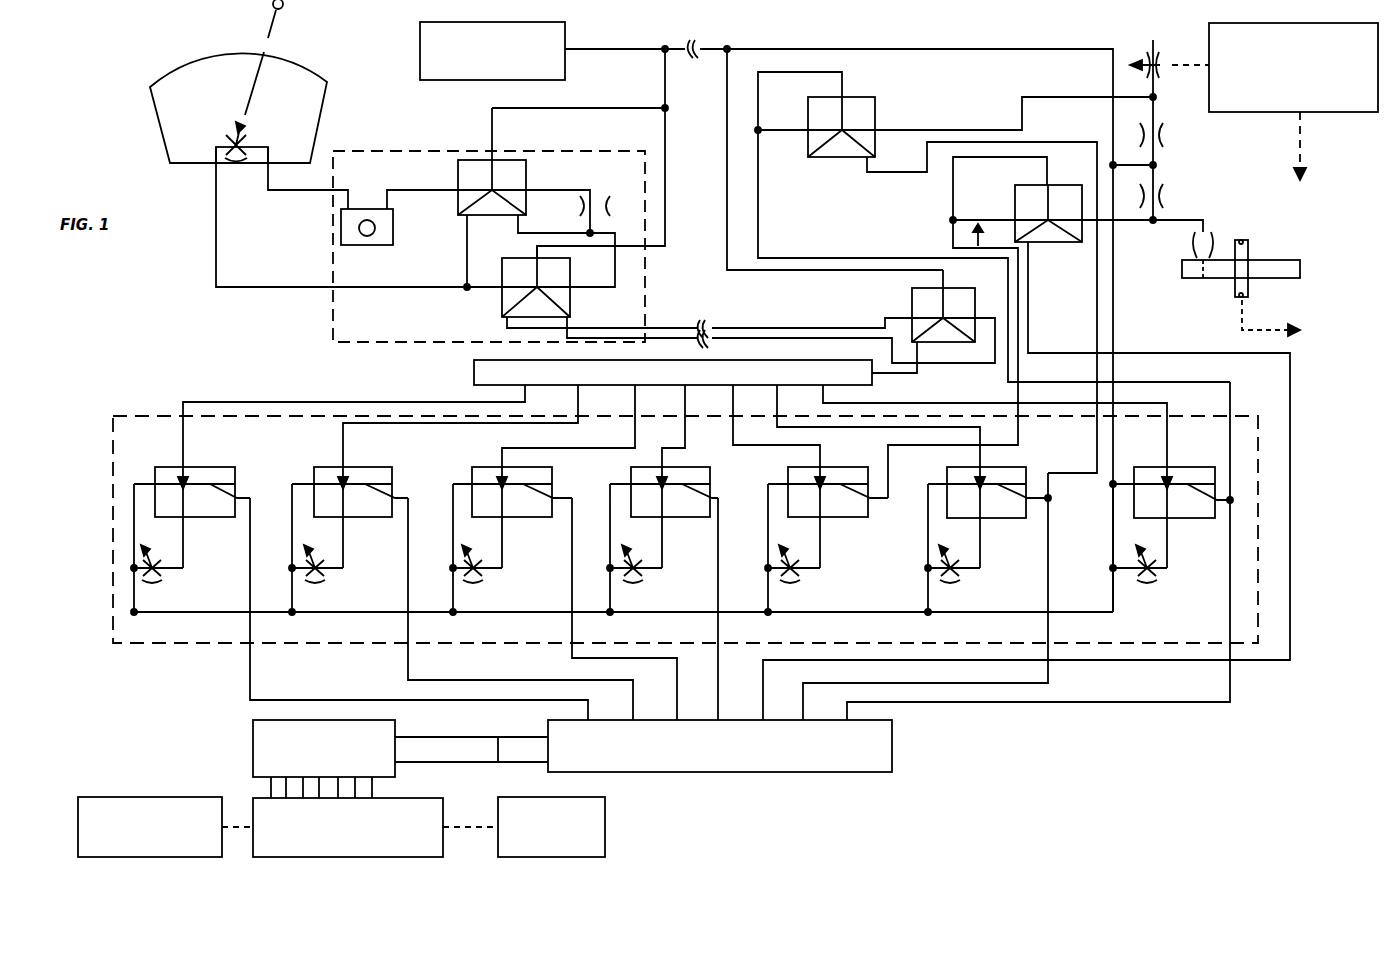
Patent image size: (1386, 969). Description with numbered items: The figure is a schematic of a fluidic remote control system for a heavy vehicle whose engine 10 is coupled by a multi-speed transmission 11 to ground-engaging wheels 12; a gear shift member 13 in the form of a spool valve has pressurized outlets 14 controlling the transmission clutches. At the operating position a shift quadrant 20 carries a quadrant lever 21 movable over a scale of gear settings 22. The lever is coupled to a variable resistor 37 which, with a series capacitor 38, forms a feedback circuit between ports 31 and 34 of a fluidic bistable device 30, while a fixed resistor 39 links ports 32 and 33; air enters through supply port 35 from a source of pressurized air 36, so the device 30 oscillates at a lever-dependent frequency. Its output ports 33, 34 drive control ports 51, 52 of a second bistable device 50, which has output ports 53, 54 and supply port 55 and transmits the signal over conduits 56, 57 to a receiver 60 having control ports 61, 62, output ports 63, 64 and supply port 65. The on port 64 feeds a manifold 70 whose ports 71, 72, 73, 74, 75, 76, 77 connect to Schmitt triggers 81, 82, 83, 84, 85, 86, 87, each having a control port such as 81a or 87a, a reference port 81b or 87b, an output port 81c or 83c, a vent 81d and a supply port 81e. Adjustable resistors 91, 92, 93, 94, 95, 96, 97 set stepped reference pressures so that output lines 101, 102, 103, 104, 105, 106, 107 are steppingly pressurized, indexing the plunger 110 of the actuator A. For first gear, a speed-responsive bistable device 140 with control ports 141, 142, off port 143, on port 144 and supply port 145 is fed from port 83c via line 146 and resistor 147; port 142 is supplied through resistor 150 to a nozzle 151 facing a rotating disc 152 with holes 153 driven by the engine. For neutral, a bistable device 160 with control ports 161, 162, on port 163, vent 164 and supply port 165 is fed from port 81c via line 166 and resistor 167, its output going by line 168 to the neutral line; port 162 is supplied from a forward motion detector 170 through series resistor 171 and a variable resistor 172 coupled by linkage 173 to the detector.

The engine 10 is at (118, 796).
The multi-speed transmission 11 is at (428, 857).
The ground-engaging wheels 12 is at (605, 835).
The gear shift member 13 is at (247, 745).
The pressurized outlets 14 is at (252, 789).
The shift quadrant 20 is at (171, 136).
The quadrant lever 21 is at (286, 22).
The scale of gear settings 22 is at (158, 52).
The fluidic bistable device 30 is at (526, 172).
The first control port 31 is at (440, 187).
The second control port 32 is at (553, 188).
The off output port 33 is at (528, 221).
The on output port 34 is at (462, 222).
The supply port 35 is at (494, 154).
The source of pressurized air 36 is at (565, 66).
The variable resistor 37 is at (227, 142).
The series capacitor 38 is at (375, 244).
The fixed resistor 39 is at (606, 206).
The second bistable device 50 is at (568, 270).
The control port 51 is at (607, 286).
The control port 52 is at (500, 294).
The output port 53 is at (504, 322).
The output port 54 is at (570, 320).
The supply port 55 is at (534, 255).
The conduit 56 is at (744, 324).
The conduit 57 is at (808, 326).
The receiver 60 is at (958, 286).
The control port 61 is at (907, 310).
The control port 62 is at (976, 314).
The output port 63 is at (962, 338).
The on output port 64 is at (919, 344).
The supply port 65 is at (942, 270).
The manifold 70 is at (474, 378).
The manifold port 71 is at (866, 396).
The manifold port 72 is at (776, 416).
The manifold port 73 is at (735, 428).
The manifold port 74 is at (682, 414).
The manifold port 75 is at (636, 422).
The manifold port 76 is at (580, 402).
The manifold port 77 is at (528, 390).
The Schmitt trigger 81 is at (1169, 467).
The control port 81a is at (1167, 468).
The reference port 81b is at (1168, 540).
The output port 81c is at (1218, 500).
The vent 81d is at (1216, 480).
The supply port 81e is at (1143, 494).
The Schmitt trigger 82 is at (1014, 470).
The Schmitt trigger 83 is at (824, 467).
The output port 83c is at (867, 508).
The Schmitt trigger 84 is at (709, 467).
The Schmitt trigger 85 is at (550, 467).
The Schmitt trigger 86 is at (372, 467).
The Schmitt trigger 87 is at (216, 467).
The control port 87a is at (180, 462).
The reference port 87b is at (190, 518).
The adjustable resistor 91 is at (1146, 587).
The adjustable resistor 92 is at (946, 592).
The adjustable resistor 93 is at (816, 596).
The adjustable resistor 94 is at (641, 590).
The adjustable resistor 95 is at (481, 586).
The adjustable resistor 96 is at (326, 582).
The adjustable resistor 97 is at (171, 584).
The output line 101 is at (909, 704).
The output line 102 is at (834, 686).
The output line 103 is at (762, 691).
The output line 104 is at (714, 688).
The output line 105 is at (672, 693).
The output line 106 is at (630, 698).
The output line 107 is at (586, 700).
The plunger 110 is at (408, 726).
The speed-responsive bistable device 140 is at (1055, 202).
The control port 141 is at (1007, 212).
The control port 142 is at (1077, 242).
The off output port 143 is at (1064, 242).
The on output port 144 is at (1030, 242).
The supply port 145 is at (1058, 175).
The line 146 is at (948, 238).
The resistor 147 is at (978, 212).
The resistor 150 is at (1161, 198).
The nozzle 151 is at (1226, 244).
The rotating disc 152 is at (1300, 268).
The holes 153 is at (1198, 280).
The bistable device 160 is at (878, 112).
The control port 161 is at (795, 122).
The control port 162 is at (902, 122).
The on output port 163 is at (864, 160).
The vent 164 is at (818, 160).
The supply port 165 is at (843, 96).
The line 166 is at (772, 228).
The resistor 167 is at (764, 152).
The line 168 is at (1113, 334).
The forward motion detector 170 is at (1307, 22).
The series resistor 171 is at (1161, 138).
The variable resistor 172 is at (1158, 52).
The linkage 173 is at (1180, 76).
The actuator A is at (892, 756).